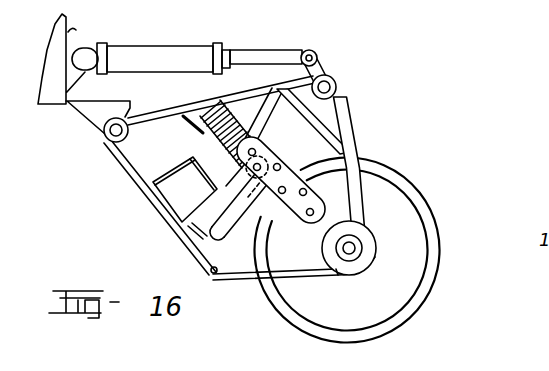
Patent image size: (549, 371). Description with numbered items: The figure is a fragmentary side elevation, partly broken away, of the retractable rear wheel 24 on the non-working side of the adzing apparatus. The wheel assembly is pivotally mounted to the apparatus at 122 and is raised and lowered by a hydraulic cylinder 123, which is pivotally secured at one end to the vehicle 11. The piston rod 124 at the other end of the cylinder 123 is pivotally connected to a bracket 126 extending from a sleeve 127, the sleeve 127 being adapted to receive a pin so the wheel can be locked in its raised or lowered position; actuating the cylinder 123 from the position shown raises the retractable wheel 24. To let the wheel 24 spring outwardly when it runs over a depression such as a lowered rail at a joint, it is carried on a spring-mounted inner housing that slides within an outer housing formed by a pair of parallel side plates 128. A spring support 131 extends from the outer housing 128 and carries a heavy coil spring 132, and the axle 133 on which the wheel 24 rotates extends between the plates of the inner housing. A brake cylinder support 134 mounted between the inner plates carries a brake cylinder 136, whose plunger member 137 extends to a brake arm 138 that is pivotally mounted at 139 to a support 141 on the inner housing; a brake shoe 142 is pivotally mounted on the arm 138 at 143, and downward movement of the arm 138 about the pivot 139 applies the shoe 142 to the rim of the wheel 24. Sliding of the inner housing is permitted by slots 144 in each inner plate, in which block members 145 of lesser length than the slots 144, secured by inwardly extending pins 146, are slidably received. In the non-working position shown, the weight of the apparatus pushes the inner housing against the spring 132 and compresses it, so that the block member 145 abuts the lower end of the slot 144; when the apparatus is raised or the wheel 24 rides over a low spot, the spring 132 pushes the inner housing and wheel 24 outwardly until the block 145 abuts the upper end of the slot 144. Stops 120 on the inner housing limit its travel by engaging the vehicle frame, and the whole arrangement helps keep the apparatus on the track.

The vehicle 11 is at (59, 49).
The retractable rear wheel 24 is at (388, 327).
The stops 120 is at (353, 110).
The pivotal mounting 122 is at (110, 141).
The hydraulic cylinder 123 is at (170, 45).
The piston rod 124 is at (257, 55).
The bracket 126 is at (324, 63).
The sleeve 127 is at (337, 86).
The side plates of outer housing 128 is at (338, 281).
The spring support 131 is at (196, 105).
The coil spring 132 is at (242, 108).
The axle 133 is at (356, 245).
The brake cylinder support 134 is at (185, 230).
The brake cylinder 136 is at (177, 199).
The plunger member 137 is at (196, 244).
The brake arm 138 is at (234, 226).
The pivot 139 is at (349, 118).
The support 141 is at (288, 133).
The brake shoe 142 is at (358, 156).
The pivotal mounting of brake shoe 143 is at (242, 203).
The slots 144 is at (294, 216).
The block members 145 is at (307, 202).
The pins 146 is at (236, 167).